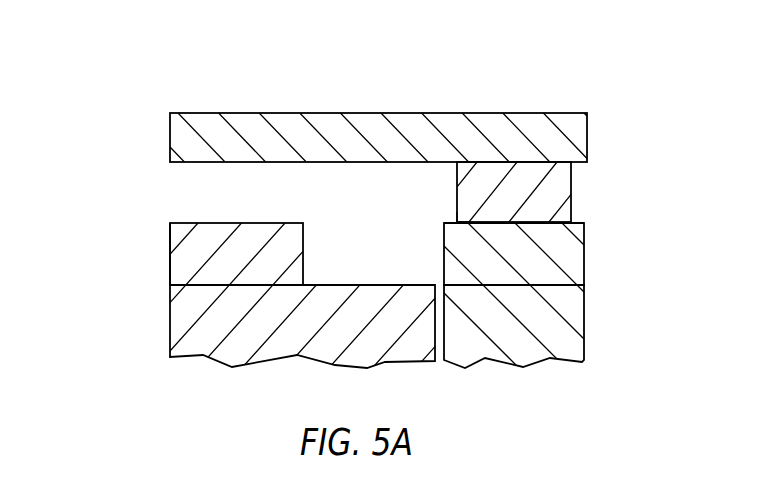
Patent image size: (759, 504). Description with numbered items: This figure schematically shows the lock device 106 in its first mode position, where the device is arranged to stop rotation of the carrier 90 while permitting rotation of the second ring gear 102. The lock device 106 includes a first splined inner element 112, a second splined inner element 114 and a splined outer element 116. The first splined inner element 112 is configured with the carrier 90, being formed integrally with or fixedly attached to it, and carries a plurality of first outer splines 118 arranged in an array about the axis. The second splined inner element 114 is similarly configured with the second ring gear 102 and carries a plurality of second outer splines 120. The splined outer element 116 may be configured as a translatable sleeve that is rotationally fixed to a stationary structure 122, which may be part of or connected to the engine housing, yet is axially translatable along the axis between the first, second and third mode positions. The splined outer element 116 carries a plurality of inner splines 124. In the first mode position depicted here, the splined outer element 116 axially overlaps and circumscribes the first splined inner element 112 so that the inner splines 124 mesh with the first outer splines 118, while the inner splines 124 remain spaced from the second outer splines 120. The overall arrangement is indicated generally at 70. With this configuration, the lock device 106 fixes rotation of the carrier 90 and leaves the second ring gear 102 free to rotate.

The joint assembly 70 is at (152, 93).
The lock device 106 is at (610, 92).
The stationary structure 122 is at (397, 112).
The splined outer element 116 is at (572, 195).
The first outer splines 118 is at (468, 222).
The second splined inner element 114 is at (168, 260).
The second outer splines 120 is at (237, 223).
The second ring gear 102 is at (218, 365).
The inner splines 124 is at (550, 225).
The first splined inner element 112 is at (585, 256).
The carrier 90 is at (548, 362).